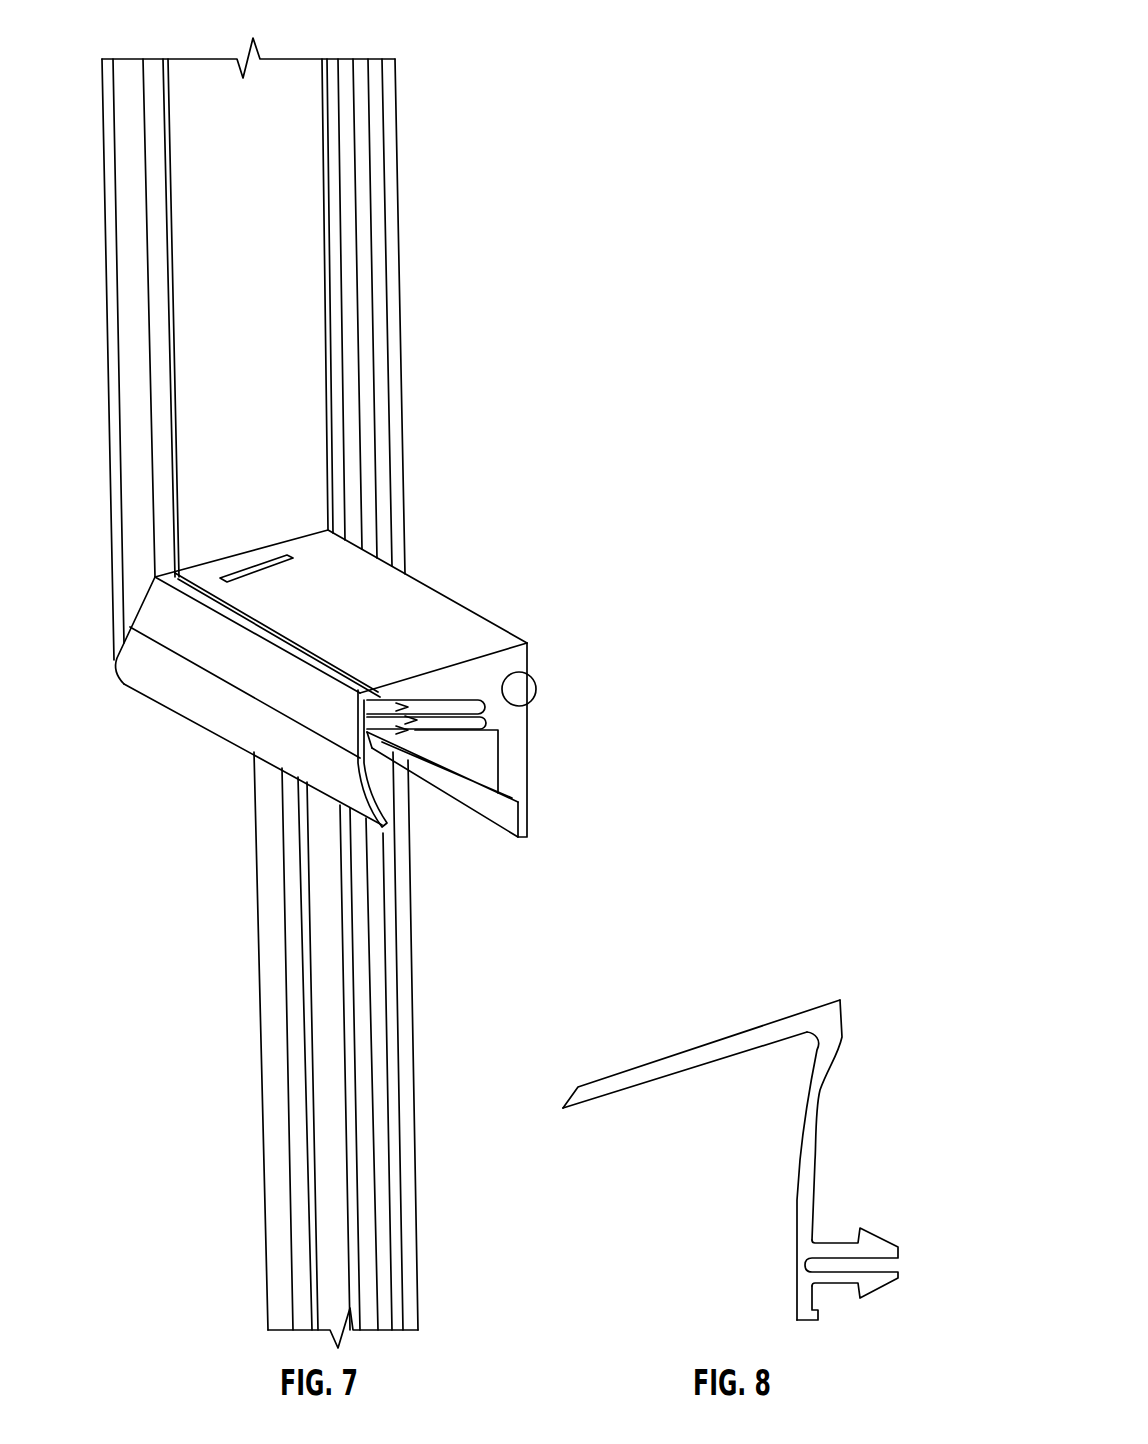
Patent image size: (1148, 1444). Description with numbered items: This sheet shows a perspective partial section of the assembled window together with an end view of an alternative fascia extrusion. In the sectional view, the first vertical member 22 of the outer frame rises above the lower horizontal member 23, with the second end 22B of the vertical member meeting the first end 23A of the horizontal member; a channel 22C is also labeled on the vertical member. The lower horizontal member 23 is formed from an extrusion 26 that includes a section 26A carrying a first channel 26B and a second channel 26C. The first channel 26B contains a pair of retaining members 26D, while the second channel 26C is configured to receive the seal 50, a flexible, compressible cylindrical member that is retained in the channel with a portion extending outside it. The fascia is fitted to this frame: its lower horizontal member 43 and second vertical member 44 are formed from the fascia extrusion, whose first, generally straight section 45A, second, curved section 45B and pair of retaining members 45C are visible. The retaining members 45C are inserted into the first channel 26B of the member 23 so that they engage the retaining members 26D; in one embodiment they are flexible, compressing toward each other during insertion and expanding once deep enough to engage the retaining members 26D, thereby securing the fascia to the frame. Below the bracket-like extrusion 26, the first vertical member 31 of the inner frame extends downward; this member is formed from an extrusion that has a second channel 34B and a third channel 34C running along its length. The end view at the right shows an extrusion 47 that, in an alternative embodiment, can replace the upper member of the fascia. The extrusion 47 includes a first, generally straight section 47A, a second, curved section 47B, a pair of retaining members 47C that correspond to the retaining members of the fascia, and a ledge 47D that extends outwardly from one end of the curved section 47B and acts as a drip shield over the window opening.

In FIG. 7, the first vertical member 22 is at (269, 341).
In FIG. 7, the second end 22B is at (388, 156).
In FIG. 7, the post channel 22C is at (328, 84).
In FIG. 7, the second vertical member 44 is at (128, 243).
In FIG. 7, the second or lower horizontal member 23 is at (366, 653).
In FIG. 7, the first end 23A is at (323, 563).
In FIG. 7, the extrusion 26 is at (508, 740).
In FIG. 7, the section 26A is at (372, 606).
In FIG. 7, the first channel 26B is at (497, 725).
In FIG. 7, the second channel 26C is at (529, 666).
In FIG. 7, the retaining members 26D is at (393, 692).
In FIG. 7, the first, generally straight section 45A is at (243, 665).
In FIG. 7, the second, curved section 45B is at (310, 765).
In FIG. 7, the retaining members 45C is at (393, 706).
In FIG. 7, the second or lower horizontal member 43 is at (247, 730).
In FIG. 7, the seal 50 is at (518, 689).
In FIG. 7, the first vertical member 31 is at (338, 1050).
In FIG. 7, the second channel 34B is at (377, 1052).
In FIG. 7, the third channel 34C is at (304, 1138).
In FIG. 8, the extrusion 47 is at (760, 1149).
In FIG. 8, the first, generally straight section 47A is at (797, 1303).
In FIG. 8, the second, curved section 47B is at (822, 1076).
In FIG. 8, the retaining members 47C is at (870, 1242).
In FIG. 8, the ledge 47D is at (673, 1063).